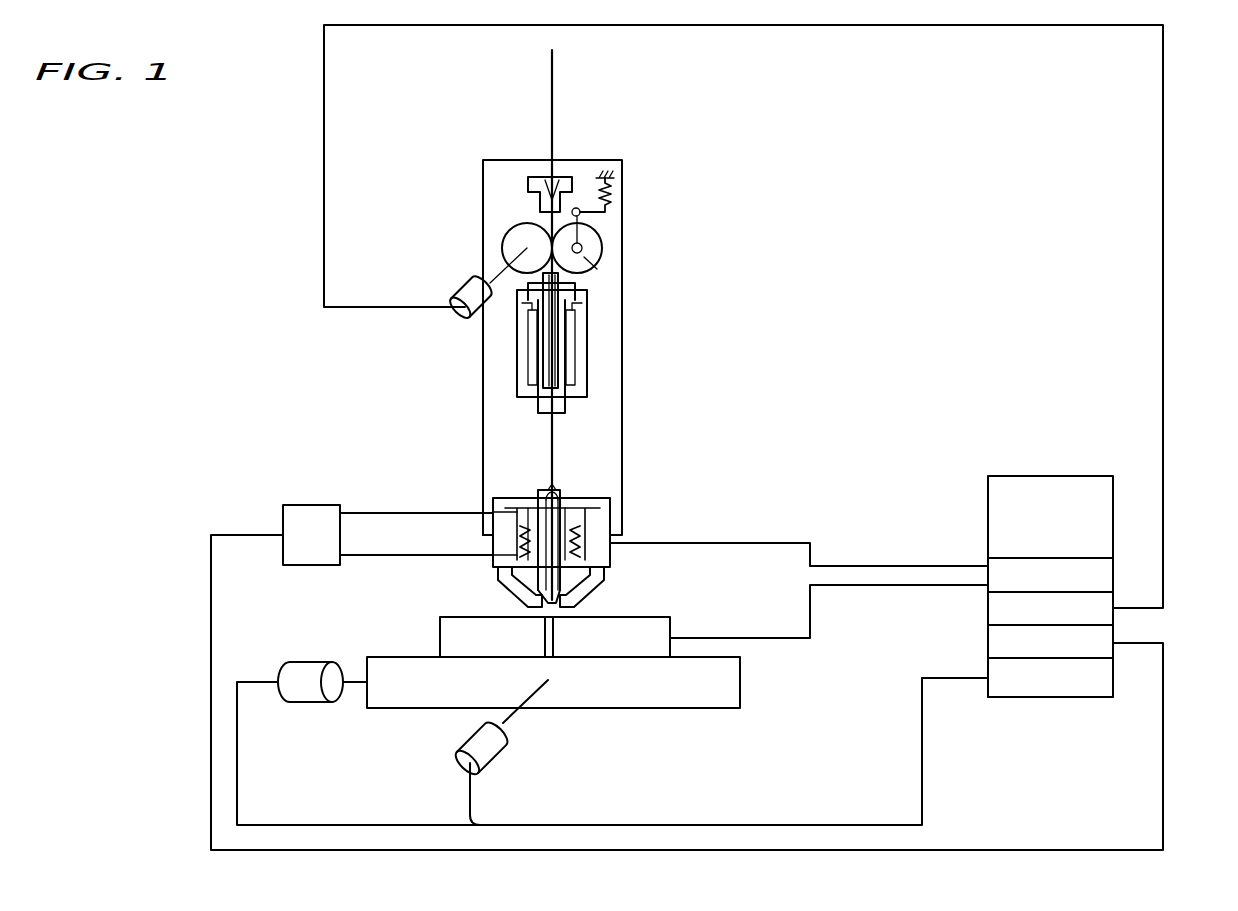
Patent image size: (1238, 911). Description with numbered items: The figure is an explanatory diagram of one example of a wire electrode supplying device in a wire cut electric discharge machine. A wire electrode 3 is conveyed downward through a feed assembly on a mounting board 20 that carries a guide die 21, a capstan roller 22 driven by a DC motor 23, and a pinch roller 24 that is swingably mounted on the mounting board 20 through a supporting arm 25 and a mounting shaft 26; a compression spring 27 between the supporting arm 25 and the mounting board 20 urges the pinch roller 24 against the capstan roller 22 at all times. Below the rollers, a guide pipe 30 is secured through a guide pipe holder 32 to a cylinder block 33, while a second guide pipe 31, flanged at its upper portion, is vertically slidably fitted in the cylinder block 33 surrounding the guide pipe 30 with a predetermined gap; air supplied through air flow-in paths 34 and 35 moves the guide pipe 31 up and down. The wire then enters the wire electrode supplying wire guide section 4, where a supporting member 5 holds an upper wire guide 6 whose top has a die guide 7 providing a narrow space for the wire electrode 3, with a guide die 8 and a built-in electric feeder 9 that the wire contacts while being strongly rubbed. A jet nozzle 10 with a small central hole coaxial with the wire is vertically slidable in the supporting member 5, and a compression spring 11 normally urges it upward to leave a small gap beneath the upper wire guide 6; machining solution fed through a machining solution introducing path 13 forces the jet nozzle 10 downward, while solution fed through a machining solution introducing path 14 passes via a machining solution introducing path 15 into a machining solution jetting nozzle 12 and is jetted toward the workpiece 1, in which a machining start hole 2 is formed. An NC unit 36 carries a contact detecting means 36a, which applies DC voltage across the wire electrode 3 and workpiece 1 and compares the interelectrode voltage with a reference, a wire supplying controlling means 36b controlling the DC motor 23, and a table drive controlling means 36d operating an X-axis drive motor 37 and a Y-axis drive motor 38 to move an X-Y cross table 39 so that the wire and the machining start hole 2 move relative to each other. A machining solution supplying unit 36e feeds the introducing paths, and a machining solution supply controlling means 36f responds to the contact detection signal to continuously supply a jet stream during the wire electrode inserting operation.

The workpiece 1 is at (673, 626).
The machining start hole 2 is at (542, 643).
The wire electrode 3 is at (553, 78).
The wire electrode supplying wire guide section 4 is at (683, 533).
The supporting member 5 is at (612, 530).
The upper wire guide 6 is at (556, 500).
The die guide 7 is at (560, 585).
The guide die 8 is at (553, 488).
The electric feeder 9 is at (548, 490).
The jet nozzle 10 is at (510, 590).
The compression spring 11 is at (565, 553).
The machining solution jetting nozzle 12 is at (520, 602).
The machining solution introducing path 13 is at (520, 503).
The machining solution introducing path 14 is at (522, 545).
The machining solution introducing path 15 is at (515, 520).
The mounting board 20 is at (612, 158).
The guide die 21 is at (535, 180).
The capstan roller 22 is at (508, 236).
The DC motor 23 is at (470, 288).
The pinch roller 24 is at (598, 265).
The supporting arm 25 is at (583, 250).
The mounting shaft 26 is at (582, 220).
The compression spring 27 is at (612, 200).
The guide pipe 30 is at (578, 292).
The guide pipe 31 is at (565, 408).
The guide pipe holder 32 is at (590, 300).
The cylinder block 33 is at (588, 358).
The air flow-in path 34 is at (525, 318).
The air flow-in path 35 is at (530, 375).
The NC unit 36 is at (1113, 508).
The contact detecting means 36a is at (1113, 575).
The wire supplying controlling means 36b is at (988, 610).
The table drive controlling means 36d is at (1113, 690).
The machining solution supplying unit 36e is at (312, 505).
The machining solution supply controlling means 36f is at (988, 648).
The X-axis drive motor 37 is at (303, 690).
The Y-axis drive motor 38 is at (500, 748).
The X-Y cross table 39 is at (741, 690).